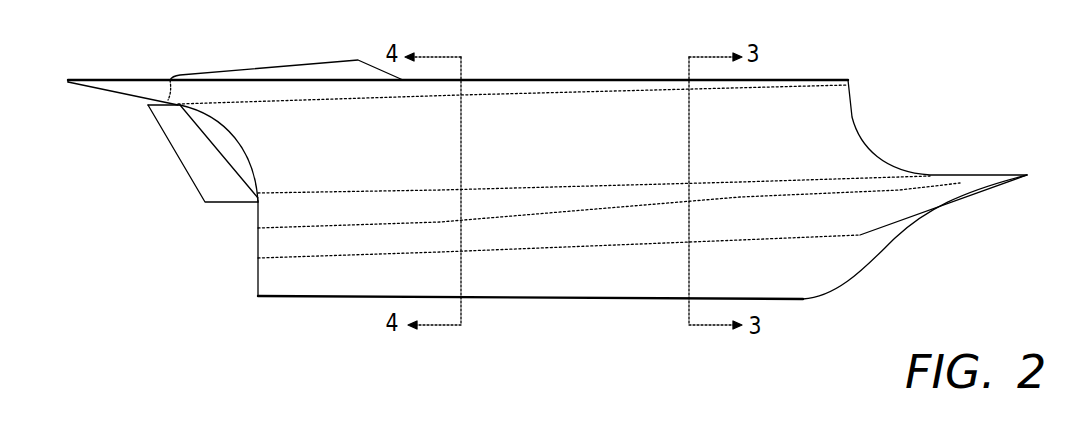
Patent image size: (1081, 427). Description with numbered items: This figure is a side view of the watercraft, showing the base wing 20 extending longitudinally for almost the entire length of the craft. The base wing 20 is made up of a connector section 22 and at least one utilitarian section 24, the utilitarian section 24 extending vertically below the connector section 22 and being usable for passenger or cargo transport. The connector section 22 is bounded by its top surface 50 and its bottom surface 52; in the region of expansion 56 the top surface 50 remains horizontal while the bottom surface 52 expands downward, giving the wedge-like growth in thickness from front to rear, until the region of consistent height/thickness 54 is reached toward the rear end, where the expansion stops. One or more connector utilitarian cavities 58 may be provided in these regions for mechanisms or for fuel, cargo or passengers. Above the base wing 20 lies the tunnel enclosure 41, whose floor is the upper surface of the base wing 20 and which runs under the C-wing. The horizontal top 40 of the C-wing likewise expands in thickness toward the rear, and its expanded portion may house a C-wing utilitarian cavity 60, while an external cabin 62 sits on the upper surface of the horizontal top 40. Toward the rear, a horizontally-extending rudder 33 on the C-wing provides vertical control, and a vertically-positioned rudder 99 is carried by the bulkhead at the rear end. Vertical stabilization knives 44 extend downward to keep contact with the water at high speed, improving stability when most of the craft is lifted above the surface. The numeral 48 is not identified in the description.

The base wing 20 is at (602, 227).
The connector section 22 is at (405, 207).
The utilitarian section 24 is at (320, 243).
The horizontally-extending rudder 33 is at (140, 88).
The horizontal top of the C-wing 40 is at (512, 90).
The tunnel enclosure 41 is at (773, 120).
The vertical stabilization knife 44 is at (780, 277).
The bottom 48 is at (687, 426).
The top surface of the connector section 50 is at (632, 185).
The bottom surface of the connector section 52 is at (663, 202).
The region of consistent height/thickness 54 is at (287, 207).
The region of expansion 56 is at (502, 202).
The connector utilitarian cavity 58 is at (385, 207).
The C-wing utilitarian cavity 60 is at (480, 90).
The external cabin 62 is at (356, 68).
The vertically-positioned rudder 99 is at (208, 173).